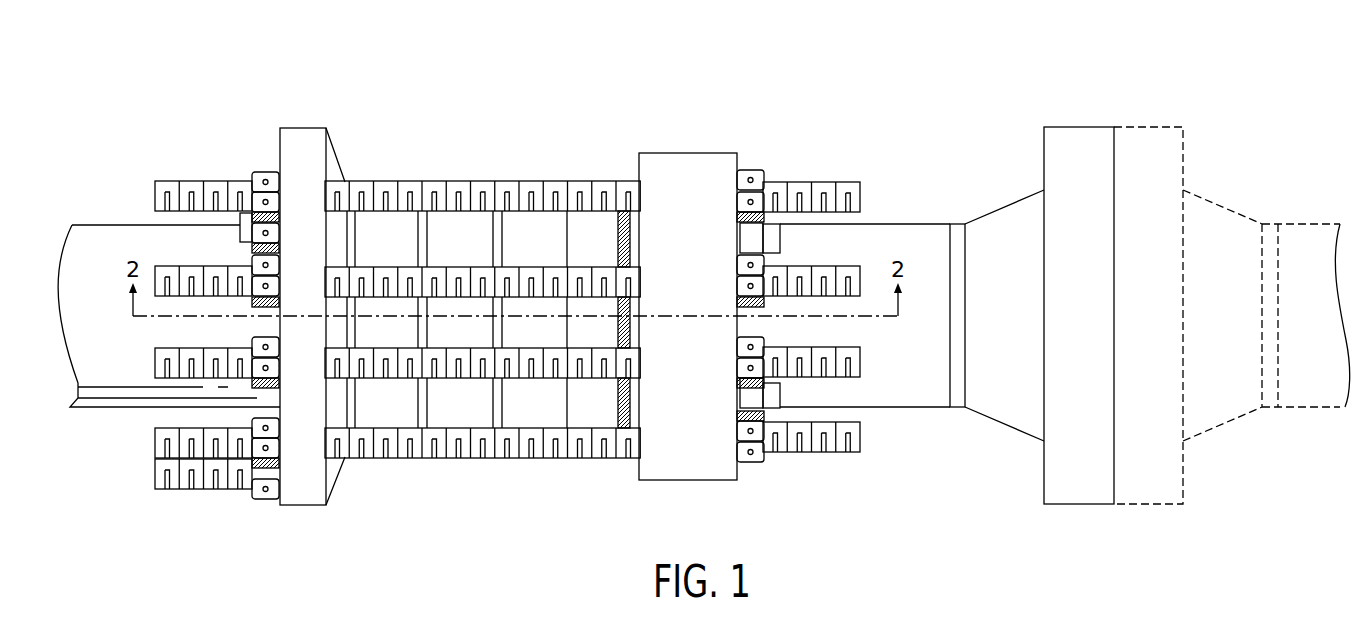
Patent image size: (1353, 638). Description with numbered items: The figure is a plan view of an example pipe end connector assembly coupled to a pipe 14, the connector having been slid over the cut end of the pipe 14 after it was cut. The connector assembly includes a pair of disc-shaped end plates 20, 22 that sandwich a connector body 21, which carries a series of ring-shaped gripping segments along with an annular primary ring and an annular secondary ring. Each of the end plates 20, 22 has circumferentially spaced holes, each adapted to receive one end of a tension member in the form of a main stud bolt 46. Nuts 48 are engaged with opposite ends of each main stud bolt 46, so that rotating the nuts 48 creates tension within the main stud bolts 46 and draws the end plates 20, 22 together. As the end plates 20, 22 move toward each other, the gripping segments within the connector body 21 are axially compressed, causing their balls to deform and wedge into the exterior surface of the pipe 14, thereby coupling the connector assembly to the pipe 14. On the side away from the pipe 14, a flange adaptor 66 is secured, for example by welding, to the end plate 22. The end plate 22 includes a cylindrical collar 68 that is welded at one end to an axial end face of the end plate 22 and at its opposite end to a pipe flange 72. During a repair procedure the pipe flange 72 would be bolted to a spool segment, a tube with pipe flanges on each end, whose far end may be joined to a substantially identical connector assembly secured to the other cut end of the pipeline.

The pipe 14 is at (97, 232).
The end plate 20 is at (302, 135).
The connector body 21 is at (492, 137).
The end plate 22 is at (688, 160).
The main stud bolt 46 is at (559, 176).
The nuts 48 is at (760, 178).
The flange adaptor 66 is at (952, 200).
The cylindrical collar 68 is at (897, 398).
The pipe flange 72 is at (1080, 137).